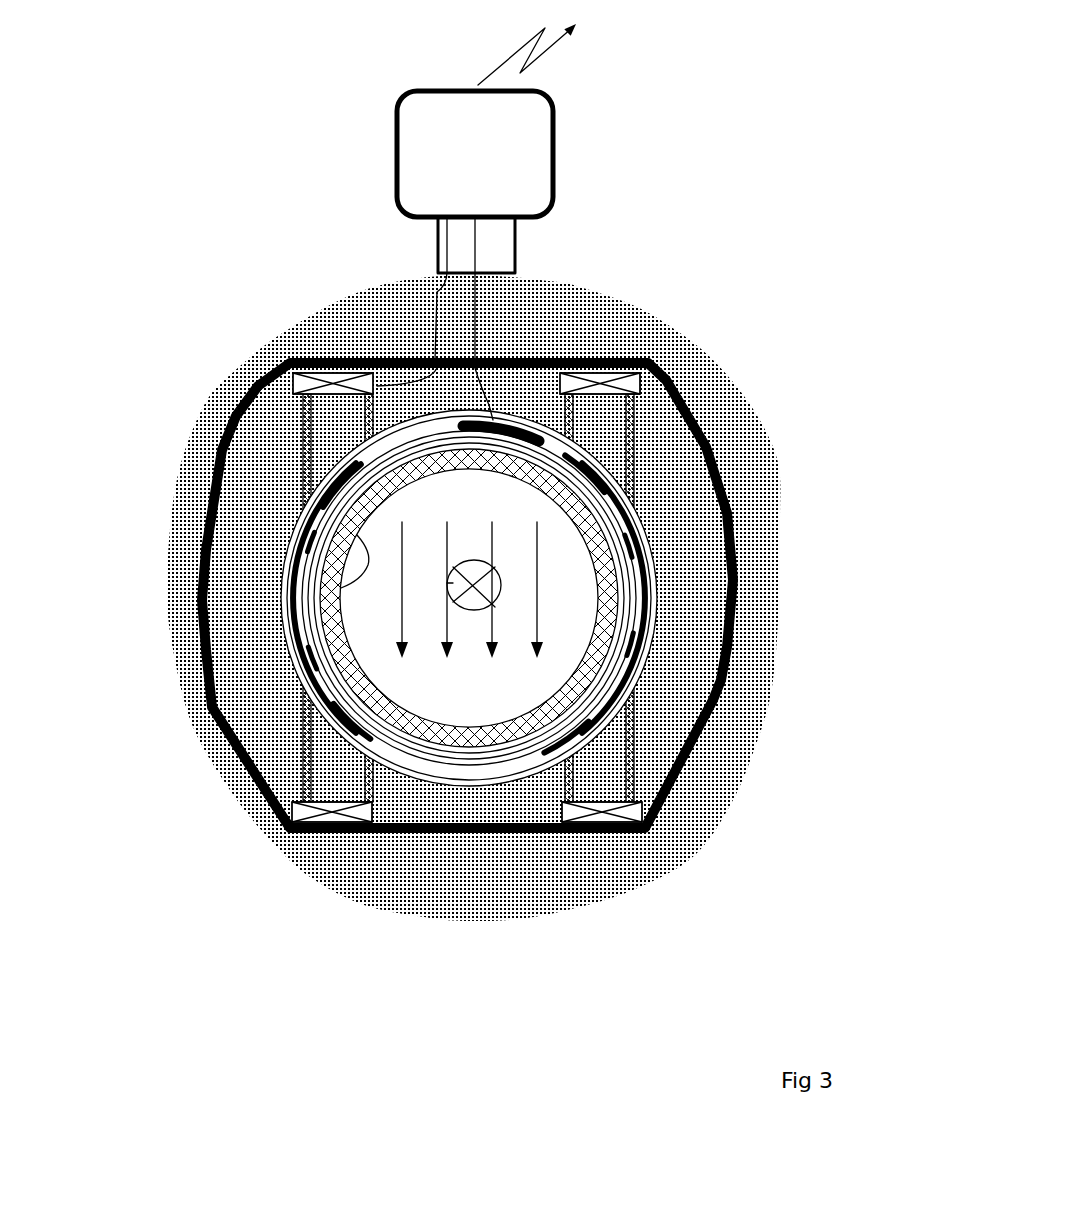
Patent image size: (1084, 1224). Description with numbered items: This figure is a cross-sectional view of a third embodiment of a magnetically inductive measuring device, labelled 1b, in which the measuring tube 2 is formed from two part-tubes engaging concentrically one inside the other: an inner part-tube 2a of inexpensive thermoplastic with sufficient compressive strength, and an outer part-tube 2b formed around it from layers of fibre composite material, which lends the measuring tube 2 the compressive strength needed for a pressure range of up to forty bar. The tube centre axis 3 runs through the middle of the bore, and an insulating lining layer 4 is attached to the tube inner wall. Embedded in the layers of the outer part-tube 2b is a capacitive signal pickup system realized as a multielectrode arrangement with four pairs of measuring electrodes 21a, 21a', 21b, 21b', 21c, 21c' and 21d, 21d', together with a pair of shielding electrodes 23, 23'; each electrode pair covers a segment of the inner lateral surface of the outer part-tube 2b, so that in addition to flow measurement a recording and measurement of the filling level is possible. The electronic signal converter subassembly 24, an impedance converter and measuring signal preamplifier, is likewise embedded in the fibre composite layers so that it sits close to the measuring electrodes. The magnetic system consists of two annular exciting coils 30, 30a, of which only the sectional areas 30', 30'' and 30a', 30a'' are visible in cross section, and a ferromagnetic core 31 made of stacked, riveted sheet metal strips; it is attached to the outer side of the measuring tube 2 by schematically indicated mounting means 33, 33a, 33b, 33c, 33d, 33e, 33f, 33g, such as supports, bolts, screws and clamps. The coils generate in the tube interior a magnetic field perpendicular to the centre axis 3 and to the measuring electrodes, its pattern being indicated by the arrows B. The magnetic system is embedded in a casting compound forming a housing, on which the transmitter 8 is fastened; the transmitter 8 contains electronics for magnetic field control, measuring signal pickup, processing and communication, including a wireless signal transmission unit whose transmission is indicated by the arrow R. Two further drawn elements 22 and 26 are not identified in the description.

The probe head 1b is at (474, 648).
The measuring tube 2 is at (405, 783).
The inner part-tube 2a is at (445, 770).
The outer part-tube 2b is at (475, 735).
The measuring tube centre axis 3 is at (465, 577).
The insulating lining layer 4 is at (360, 567).
The transmitter 8 is at (543, 125).
The measuring electrode 21a is at (744, 531).
The measuring electrode 21b is at (754, 586).
The measuring electrode 21c is at (750, 664).
The measuring electrode 21d is at (710, 734).
The measuring electrode 21a' is at (237, 484).
The measuring electrode 21b' is at (196, 534).
The measuring electrode 21c' is at (208, 659).
The measuring electrode 21d' is at (227, 733).
The coil 22 is at (540, 750).
The shielding electrode 23 is at (705, 598).
The shielding electrode 23' is at (214, 598).
The electronic signal converter subassembly 24 is at (505, 420).
The optical fiber 26 is at (478, 308).
The annular exciting coil 30 is at (466, 383).
The sectional area of annular coil 30' is at (300, 307).
The sectional area of annular coil 30'' is at (706, 347).
The annular exciting coil 30a is at (467, 812).
The sectional area of annular coil 30a' is at (267, 851).
The sectional area of annular coil 30a'' is at (690, 851).
The ferromagnetic core 31 is at (375, 366).
The mounting means 33 is at (240, 420).
The mounting means 33a is at (303, 433).
The mounting means 33b is at (312, 800).
The mounting means 33c is at (405, 805).
The mounting means 33d is at (573, 747).
The mounting means 33e is at (613, 750).
The mounting means 33f is at (633, 428).
The mounting means 33g is at (633, 463).
The magnetic field arrows B is at (469, 610).
The wireless signal transmission arrow R is at (527, 54).